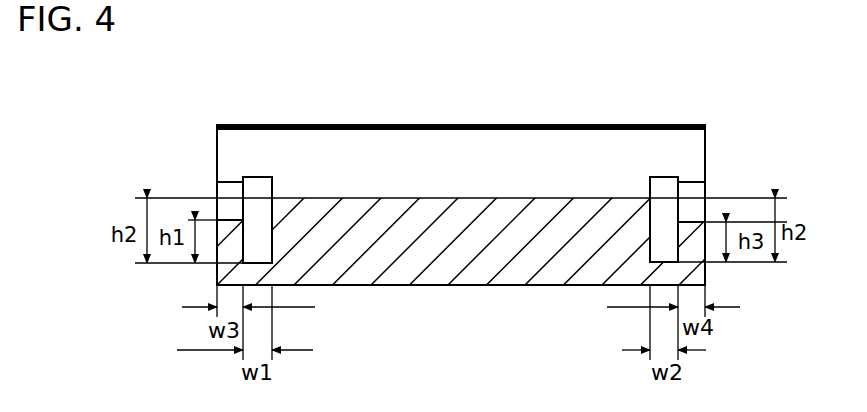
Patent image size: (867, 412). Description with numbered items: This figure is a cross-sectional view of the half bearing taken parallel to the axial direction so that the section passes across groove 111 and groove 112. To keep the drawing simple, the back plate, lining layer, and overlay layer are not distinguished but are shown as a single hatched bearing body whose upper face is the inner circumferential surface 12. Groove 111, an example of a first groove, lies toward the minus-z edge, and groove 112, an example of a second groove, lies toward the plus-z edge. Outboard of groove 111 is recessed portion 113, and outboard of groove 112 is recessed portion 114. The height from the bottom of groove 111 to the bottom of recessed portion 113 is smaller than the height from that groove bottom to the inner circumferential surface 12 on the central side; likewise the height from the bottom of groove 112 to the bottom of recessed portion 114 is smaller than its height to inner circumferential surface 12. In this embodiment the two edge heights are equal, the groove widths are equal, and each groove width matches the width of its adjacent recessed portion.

The inner circumferential surface 12 is at (452, 198).
The groove 111 is at (259, 220).
The groove 112 is at (661, 218).
The recessed portion 113 is at (228, 220).
The recessed portion 114 is at (692, 220).